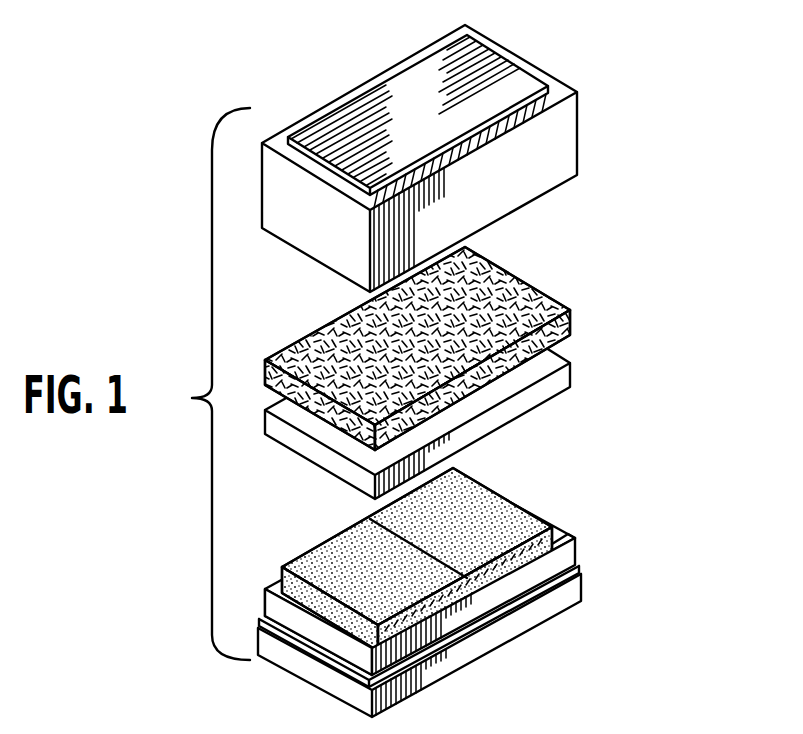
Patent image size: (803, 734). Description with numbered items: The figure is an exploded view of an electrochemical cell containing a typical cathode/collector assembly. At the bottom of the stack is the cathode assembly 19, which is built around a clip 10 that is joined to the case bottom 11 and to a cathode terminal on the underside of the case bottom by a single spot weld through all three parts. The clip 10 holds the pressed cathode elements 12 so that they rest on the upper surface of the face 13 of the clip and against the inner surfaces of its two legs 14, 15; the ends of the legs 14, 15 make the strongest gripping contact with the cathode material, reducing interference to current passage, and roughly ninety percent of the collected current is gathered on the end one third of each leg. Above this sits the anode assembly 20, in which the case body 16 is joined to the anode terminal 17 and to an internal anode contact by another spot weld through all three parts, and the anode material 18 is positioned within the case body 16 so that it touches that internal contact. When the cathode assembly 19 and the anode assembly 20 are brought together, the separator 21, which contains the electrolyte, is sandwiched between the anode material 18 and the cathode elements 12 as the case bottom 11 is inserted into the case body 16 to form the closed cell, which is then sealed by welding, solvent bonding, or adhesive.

The clip 10 is at (402, 588).
The case bottom 11 is at (545, 602).
The pressed cathode elements 12 is at (300, 570).
The face 13 is at (300, 632).
The leg 14 is at (267, 611).
The leg 15 is at (412, 645).
The case body 16 is at (550, 150).
The anode terminal 17 is at (513, 85).
The anode material 18 is at (517, 303).
The cathode assembly 19 is at (240, 608).
The anode assembly 20 is at (382, 153).
The separator 21 is at (552, 364).